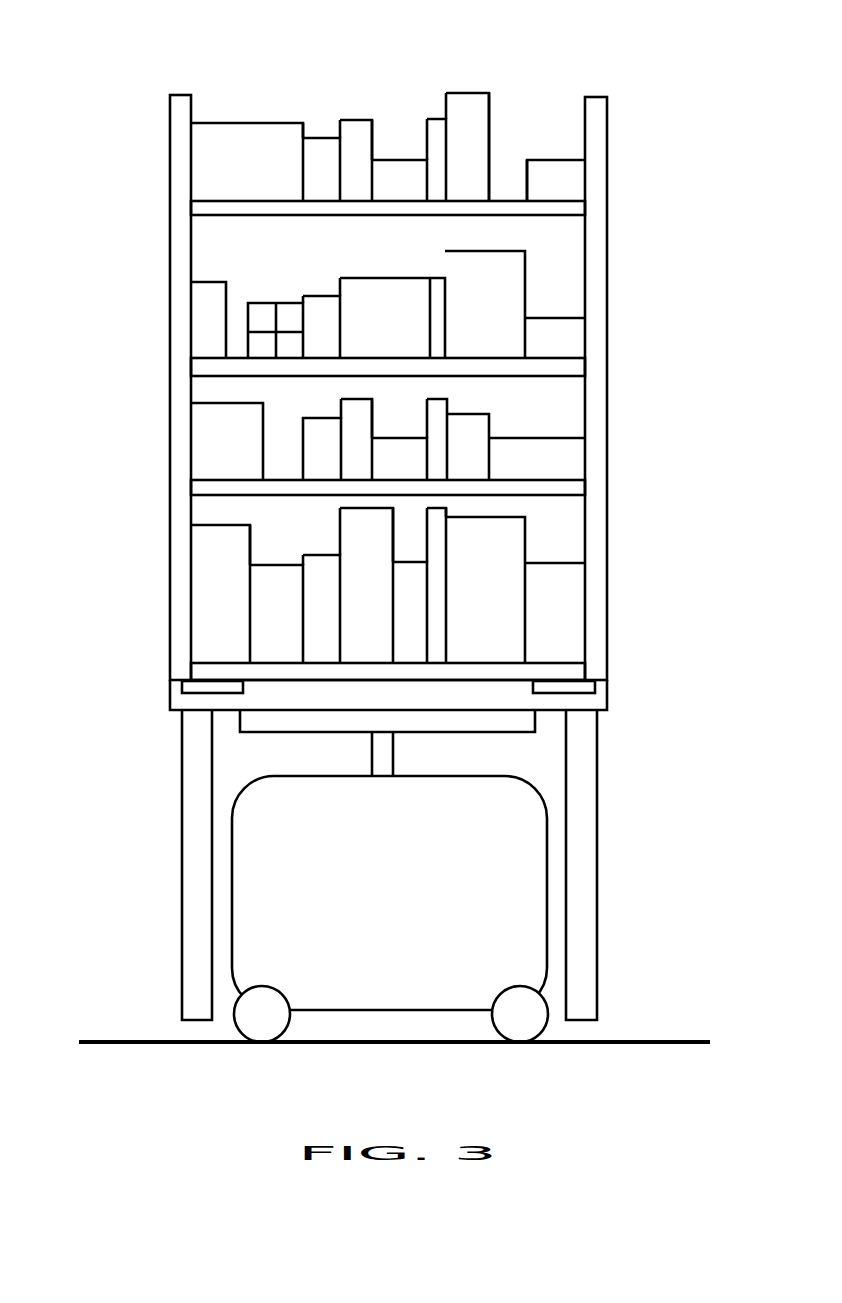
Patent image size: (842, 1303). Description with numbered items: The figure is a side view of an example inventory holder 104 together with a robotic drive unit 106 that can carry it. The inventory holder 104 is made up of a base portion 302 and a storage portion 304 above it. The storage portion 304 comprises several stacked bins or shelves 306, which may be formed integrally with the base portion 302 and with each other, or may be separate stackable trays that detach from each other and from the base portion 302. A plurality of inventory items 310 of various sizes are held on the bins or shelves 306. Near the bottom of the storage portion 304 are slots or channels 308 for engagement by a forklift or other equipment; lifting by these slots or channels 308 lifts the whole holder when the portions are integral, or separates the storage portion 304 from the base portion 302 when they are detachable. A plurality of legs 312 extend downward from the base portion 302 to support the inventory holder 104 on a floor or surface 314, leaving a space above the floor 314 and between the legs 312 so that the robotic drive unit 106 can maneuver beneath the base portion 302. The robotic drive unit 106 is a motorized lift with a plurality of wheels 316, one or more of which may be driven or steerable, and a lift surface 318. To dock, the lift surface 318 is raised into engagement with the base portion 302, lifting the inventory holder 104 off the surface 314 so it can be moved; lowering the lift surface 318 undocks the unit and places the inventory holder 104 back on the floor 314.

The inventory holder 104 is at (387, 520).
The robotic drive unit 106 is at (523, 878).
The base portion 302 is at (606, 702).
The storage portion 304 is at (429, 366).
The bins or shelves 306 is at (593, 137).
The slots or channels 308 is at (185, 684).
The inventory items 310 is at (325, 145).
The legs 312 is at (190, 846).
The floor or surface 314 is at (122, 1040).
The wheels 316 is at (255, 1022).
The lift surface 318 is at (263, 725).